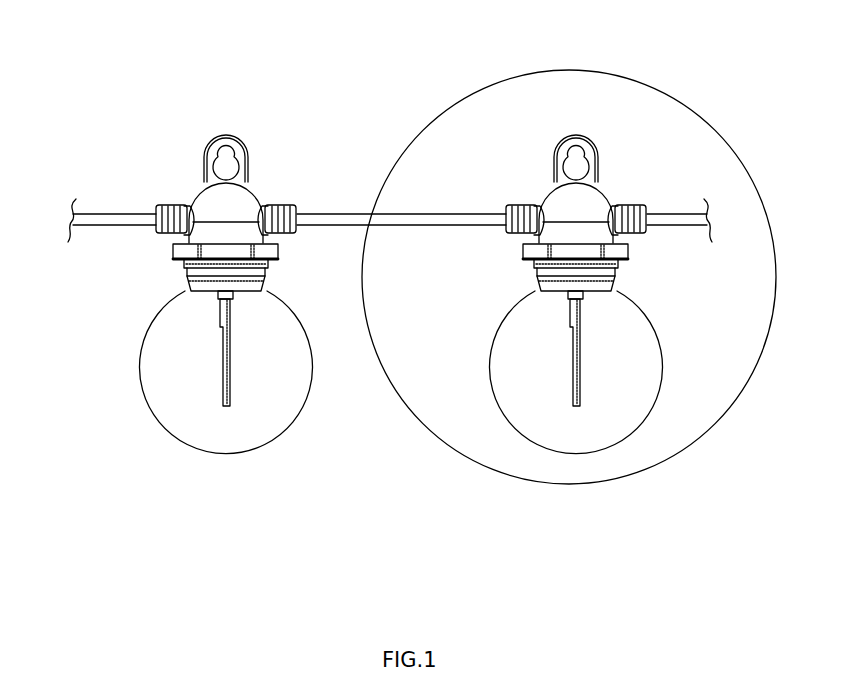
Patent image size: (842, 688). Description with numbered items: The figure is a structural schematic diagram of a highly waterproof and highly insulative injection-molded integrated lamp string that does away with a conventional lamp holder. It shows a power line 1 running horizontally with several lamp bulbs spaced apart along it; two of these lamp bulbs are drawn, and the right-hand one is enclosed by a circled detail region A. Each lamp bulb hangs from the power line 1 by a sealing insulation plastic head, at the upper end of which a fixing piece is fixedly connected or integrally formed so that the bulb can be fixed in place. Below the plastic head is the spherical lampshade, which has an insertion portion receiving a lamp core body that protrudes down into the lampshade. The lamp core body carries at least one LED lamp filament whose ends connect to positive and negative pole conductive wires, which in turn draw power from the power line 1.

The power line 1 is at (408, 216).
The detail region A is at (537, 70).